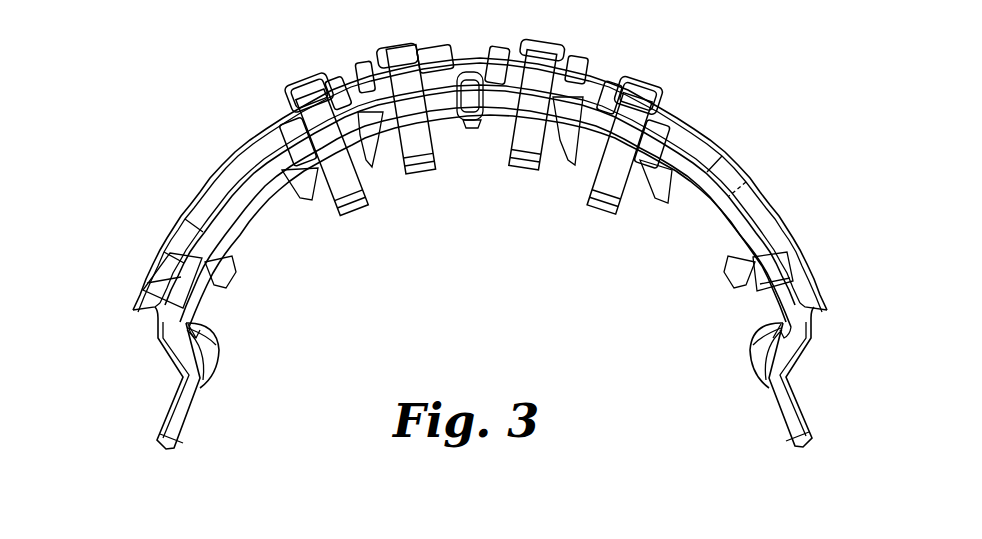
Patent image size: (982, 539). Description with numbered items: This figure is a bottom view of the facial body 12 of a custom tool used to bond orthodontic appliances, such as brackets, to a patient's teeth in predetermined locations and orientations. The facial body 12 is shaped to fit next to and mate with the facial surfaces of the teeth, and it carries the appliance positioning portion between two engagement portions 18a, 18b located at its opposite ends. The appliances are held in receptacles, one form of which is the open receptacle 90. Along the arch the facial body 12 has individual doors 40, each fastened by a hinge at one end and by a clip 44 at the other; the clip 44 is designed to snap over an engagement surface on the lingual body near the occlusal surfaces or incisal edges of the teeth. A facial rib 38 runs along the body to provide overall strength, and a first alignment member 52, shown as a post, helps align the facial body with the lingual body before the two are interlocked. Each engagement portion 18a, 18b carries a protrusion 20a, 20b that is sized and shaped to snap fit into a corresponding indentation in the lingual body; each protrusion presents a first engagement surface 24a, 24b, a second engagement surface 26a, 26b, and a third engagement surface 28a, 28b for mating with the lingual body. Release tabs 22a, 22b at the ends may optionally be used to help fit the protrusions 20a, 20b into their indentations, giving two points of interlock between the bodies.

The facial body 12 is at (104, 327).
The engagement portion 18a is at (782, 350).
The engagement portion 18b is at (182, 350).
The protrusion 20a is at (757, 362).
The protrusion 20b is at (207, 367).
The release tab 22a is at (810, 433).
The release tab 22b is at (170, 420).
The first engagement surface 24a is at (765, 322).
The first engagement surface 24b is at (193, 330).
The second engagement surface 26a is at (745, 353).
The second engagement surface 26b is at (217, 355).
The third engagement surface 28a is at (760, 338).
The third engagement surface 28b is at (212, 342).
The facial rib 38 is at (737, 177).
The door 40 is at (317, 90).
The clip 44 is at (641, 120).
The first alignment member 52 is at (473, 133).
The open receptacle 90 is at (740, 200).